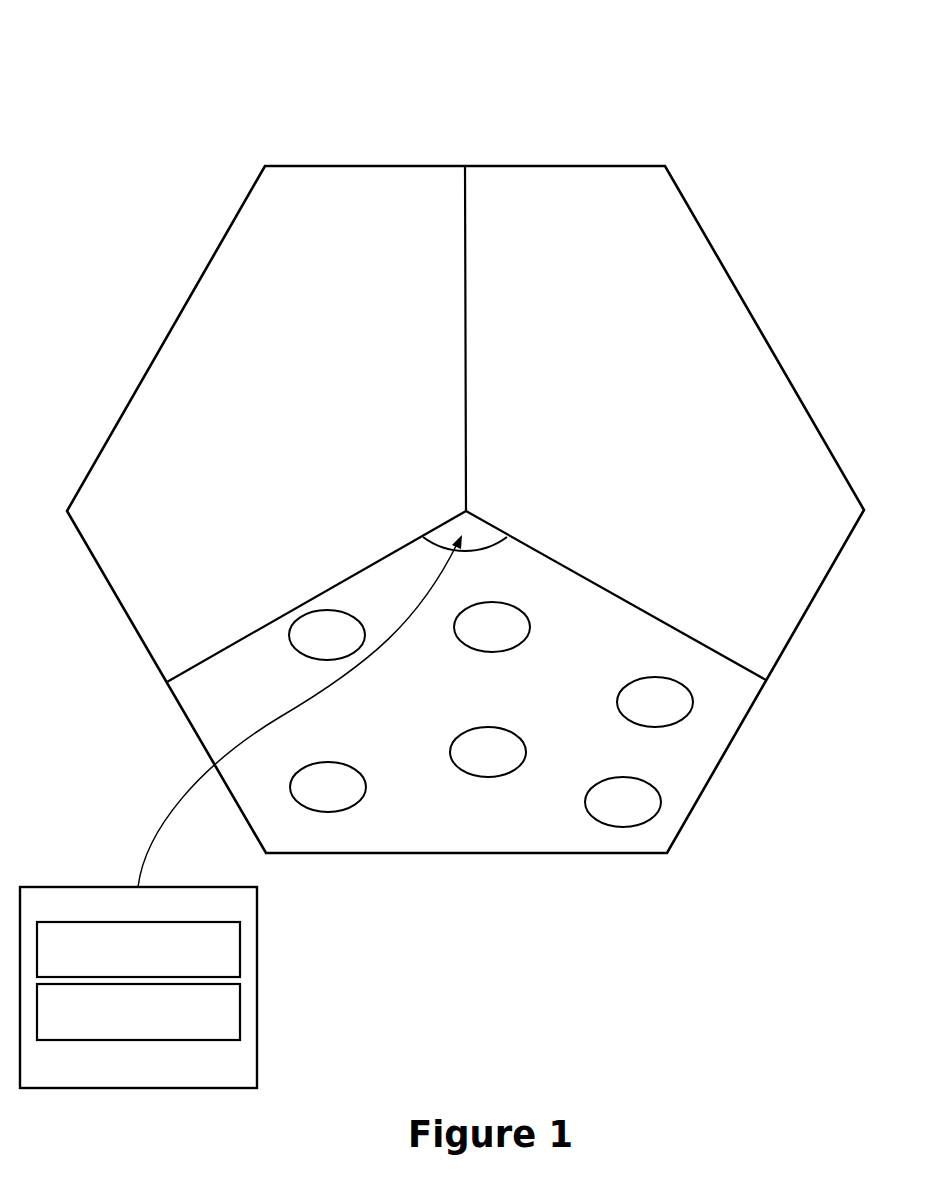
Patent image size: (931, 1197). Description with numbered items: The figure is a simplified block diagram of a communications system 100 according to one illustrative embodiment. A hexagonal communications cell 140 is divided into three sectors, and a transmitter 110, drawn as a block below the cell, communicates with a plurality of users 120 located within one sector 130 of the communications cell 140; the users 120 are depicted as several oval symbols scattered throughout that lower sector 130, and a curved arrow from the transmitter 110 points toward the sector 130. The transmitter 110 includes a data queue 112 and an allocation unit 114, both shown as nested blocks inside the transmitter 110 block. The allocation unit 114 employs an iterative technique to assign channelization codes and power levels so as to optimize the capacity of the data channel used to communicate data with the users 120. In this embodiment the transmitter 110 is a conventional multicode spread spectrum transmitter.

The communications system 100 is at (112, 96).
The transmitter 110 is at (118, 1079).
The data queue 112 is at (118, 974).
The allocation unit 114 is at (118, 1036).
The users 120 is at (491, 714).
The sector 130 is at (385, 853).
The communications cell 140 is at (132, 290).